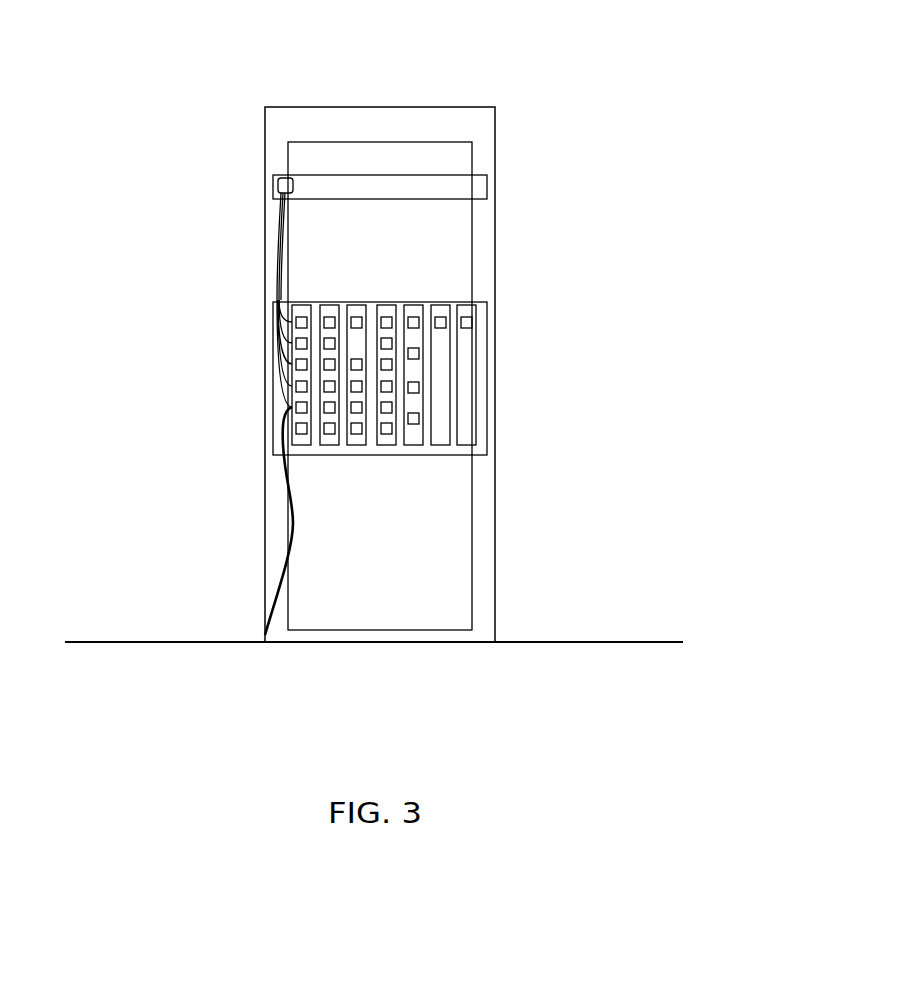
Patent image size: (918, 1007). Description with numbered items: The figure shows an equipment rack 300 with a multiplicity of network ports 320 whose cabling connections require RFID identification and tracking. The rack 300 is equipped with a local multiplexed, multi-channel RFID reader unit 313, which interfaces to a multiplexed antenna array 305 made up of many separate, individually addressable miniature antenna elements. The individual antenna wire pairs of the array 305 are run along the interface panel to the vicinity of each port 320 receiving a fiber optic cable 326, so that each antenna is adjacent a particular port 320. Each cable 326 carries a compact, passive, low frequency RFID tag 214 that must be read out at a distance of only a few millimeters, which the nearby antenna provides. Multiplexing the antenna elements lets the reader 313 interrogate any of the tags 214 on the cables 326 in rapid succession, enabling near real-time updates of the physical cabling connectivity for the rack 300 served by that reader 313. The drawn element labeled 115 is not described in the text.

The equipment rack 300 is at (365, 130).
The RFID reader unit 313 is at (372, 187).
The multiplexed antenna array 305 is at (275, 288).
The server chassis 115 is at (297, 318).
The network port 320 is at (417, 354).
The RFID tag 214 is at (303, 430).
The fiber optic cable 326 is at (292, 523).